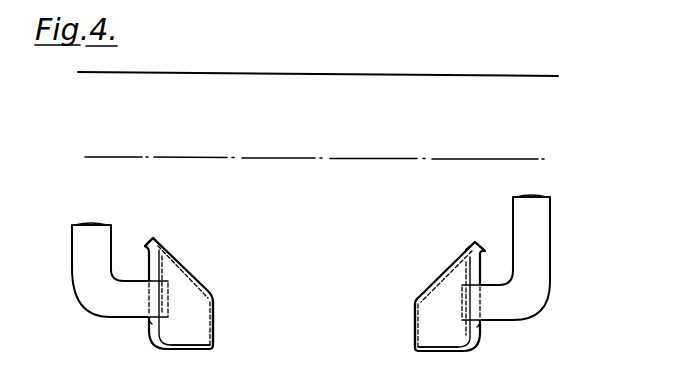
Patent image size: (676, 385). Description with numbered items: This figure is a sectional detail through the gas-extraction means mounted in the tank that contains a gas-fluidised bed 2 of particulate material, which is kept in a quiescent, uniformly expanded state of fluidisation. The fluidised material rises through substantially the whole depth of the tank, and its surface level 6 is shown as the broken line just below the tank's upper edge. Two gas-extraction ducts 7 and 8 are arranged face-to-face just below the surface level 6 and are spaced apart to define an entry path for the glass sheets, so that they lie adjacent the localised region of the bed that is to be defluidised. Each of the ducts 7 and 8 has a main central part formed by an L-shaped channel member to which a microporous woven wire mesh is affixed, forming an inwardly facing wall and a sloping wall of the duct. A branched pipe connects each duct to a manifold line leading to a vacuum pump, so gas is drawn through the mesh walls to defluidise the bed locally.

The gas-fluidised bed 2 is at (342, 198).
The surface level of the fluidised bed 6 is at (126, 157).
The gas-extraction duct 7 is at (183, 315).
The gas-extraction duct 8 is at (458, 330).